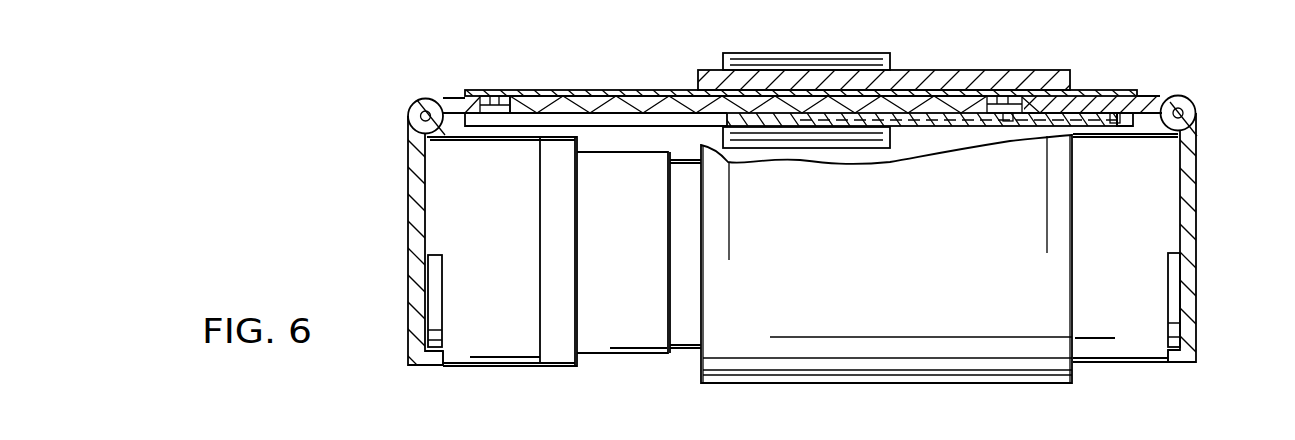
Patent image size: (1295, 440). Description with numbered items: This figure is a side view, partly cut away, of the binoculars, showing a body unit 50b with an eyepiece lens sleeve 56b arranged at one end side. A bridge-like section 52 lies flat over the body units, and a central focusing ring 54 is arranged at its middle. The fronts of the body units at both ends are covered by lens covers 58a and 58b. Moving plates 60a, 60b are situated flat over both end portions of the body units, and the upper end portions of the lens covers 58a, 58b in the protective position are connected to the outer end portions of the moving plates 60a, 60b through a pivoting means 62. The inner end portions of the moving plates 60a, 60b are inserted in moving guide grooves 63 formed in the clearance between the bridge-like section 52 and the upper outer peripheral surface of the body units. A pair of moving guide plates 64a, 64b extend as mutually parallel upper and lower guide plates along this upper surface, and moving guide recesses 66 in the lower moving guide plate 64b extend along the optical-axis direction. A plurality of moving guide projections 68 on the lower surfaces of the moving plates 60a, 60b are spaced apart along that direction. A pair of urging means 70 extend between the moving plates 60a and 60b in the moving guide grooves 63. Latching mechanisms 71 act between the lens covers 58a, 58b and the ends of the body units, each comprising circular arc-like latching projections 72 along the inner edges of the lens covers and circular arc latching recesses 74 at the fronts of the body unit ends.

The body unit 50b is at (912, 382).
The bridge-like section 52 is at (1008, 82).
The central focusing ring 54 is at (875, 53).
The eyepiece lens sleeve 56b is at (515, 353).
The lens cover 58a is at (408, 272).
The lens cover 58b is at (1199, 199).
The moving plate 60a is at (455, 97).
The moving plate 60b is at (1150, 95).
The pivoting means 62 is at (424, 111).
The moving guide groove 63 is at (667, 92).
The moving guide plate 64a is at (580, 92).
The moving guide plate 64b is at (612, 120).
The moving guide recess 66 is at (1090, 130).
The moving guide projection 68 is at (1011, 122).
The urging means 70 is at (637, 96).
The latching mechanism 71 is at (451, 343).
The latching projection 72 is at (432, 358).
The latching recess 74 is at (438, 285).